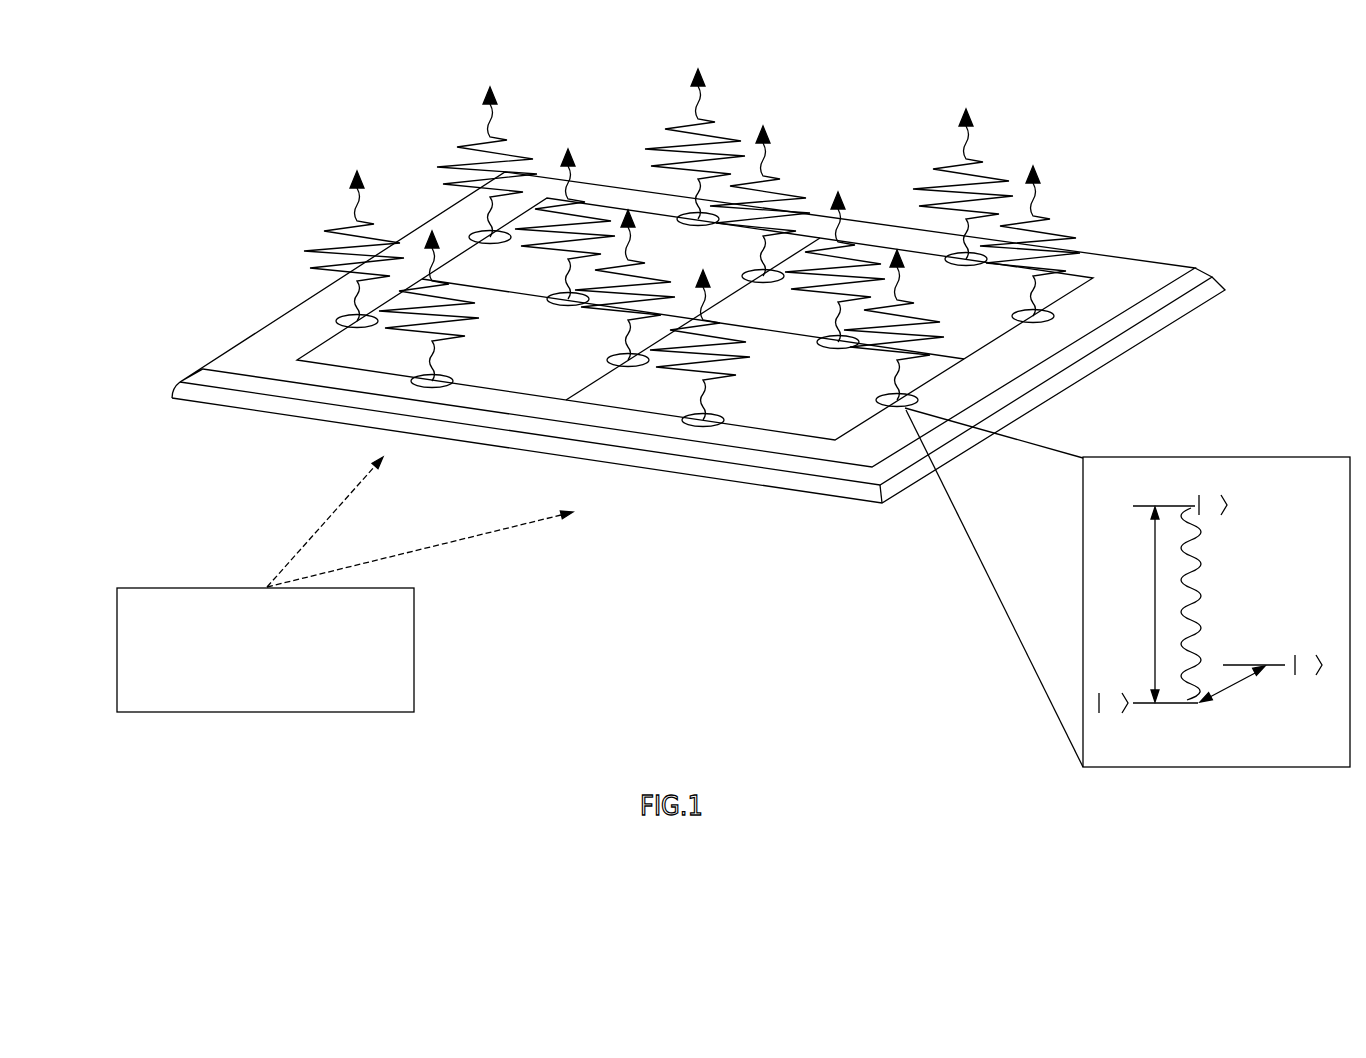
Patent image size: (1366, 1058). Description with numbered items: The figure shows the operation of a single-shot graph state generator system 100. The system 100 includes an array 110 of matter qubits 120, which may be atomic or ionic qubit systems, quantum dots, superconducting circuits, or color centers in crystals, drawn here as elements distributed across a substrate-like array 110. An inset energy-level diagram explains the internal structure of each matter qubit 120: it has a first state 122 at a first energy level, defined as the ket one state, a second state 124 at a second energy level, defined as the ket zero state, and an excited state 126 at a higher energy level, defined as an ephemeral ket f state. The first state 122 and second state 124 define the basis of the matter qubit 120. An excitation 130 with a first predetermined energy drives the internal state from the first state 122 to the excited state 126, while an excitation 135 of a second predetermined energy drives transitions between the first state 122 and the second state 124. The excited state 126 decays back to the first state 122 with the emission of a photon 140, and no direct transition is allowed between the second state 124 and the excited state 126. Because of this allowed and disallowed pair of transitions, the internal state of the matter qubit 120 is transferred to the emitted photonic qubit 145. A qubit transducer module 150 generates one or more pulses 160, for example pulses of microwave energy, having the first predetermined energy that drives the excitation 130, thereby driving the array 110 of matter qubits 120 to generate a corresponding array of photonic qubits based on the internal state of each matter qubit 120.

The single-shot graph state generator system 100 is at (270, 76).
The array 110 is at (763, 487).
The matter qubit 120 is at (877, 404).
The first state 122 is at (1143, 708).
The second state 124 is at (1277, 663).
The excited state 126 is at (1148, 505).
The excitation 130 is at (1152, 620).
The excitation 135 is at (1233, 688).
The photon 140 is at (1190, 618).
The emitted photonic qubit 145 is at (860, 350).
The qubit transducer module 150 is at (202, 712).
The pulses 160 is at (215, 587).